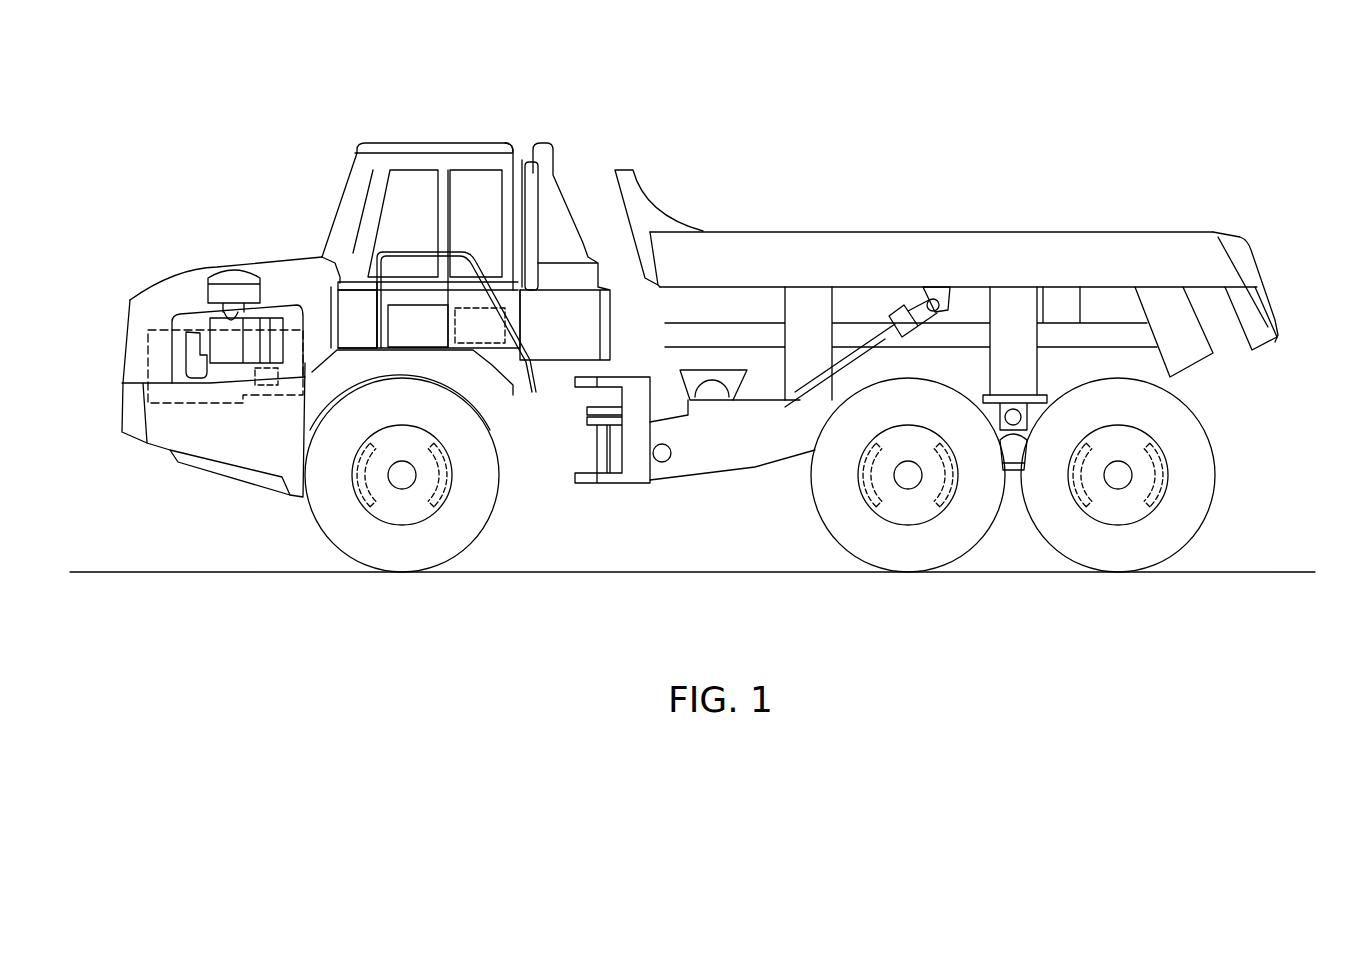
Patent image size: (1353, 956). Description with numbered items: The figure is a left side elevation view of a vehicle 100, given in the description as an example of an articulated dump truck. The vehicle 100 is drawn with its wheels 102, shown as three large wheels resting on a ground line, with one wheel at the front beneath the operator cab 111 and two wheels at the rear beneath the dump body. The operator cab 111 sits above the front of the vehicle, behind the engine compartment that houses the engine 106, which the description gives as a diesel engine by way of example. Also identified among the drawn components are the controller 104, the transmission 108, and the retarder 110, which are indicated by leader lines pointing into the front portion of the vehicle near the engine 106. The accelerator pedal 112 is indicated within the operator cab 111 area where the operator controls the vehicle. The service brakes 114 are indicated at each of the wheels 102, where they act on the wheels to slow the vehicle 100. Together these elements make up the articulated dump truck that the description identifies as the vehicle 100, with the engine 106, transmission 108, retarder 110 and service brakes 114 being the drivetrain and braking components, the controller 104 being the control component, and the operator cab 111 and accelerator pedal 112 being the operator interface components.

The vehicle 100 is at (187, 105).
The wheels 102 is at (1144, 625).
The controller 104 is at (487, 265).
The engine 106 is at (158, 318).
The transmission 108 is at (285, 386).
The retarder 110 is at (267, 397).
The operator cab 111 is at (513, 140).
The accelerator pedal 112 is at (353, 325).
The service brakes 114 is at (1228, 537).